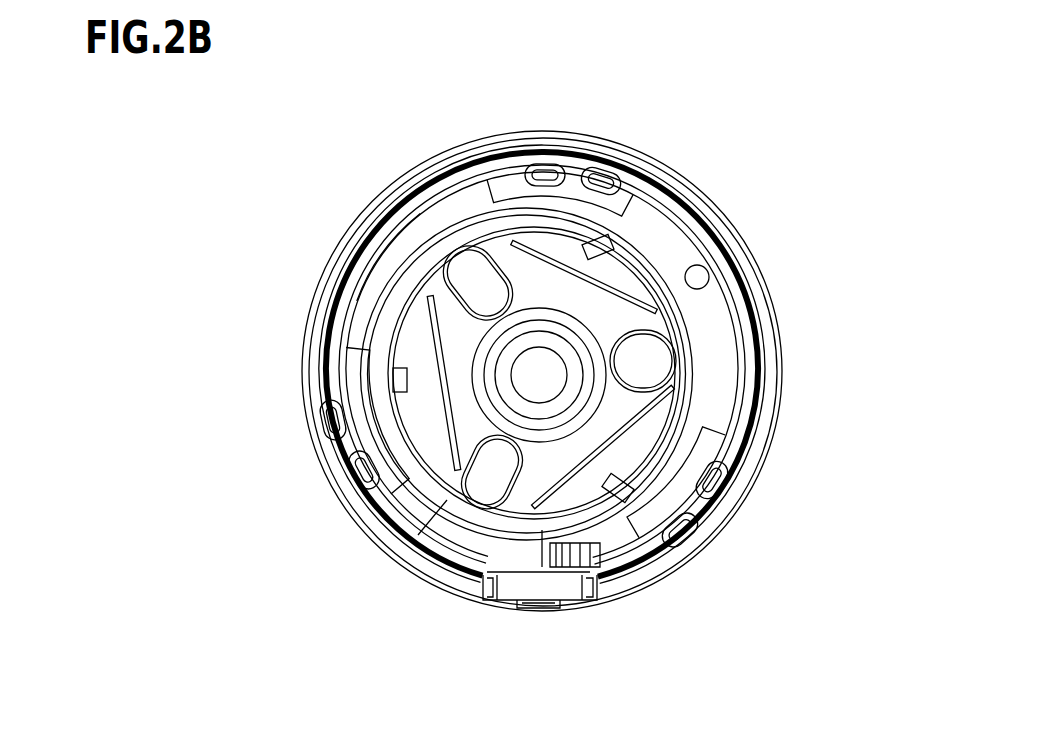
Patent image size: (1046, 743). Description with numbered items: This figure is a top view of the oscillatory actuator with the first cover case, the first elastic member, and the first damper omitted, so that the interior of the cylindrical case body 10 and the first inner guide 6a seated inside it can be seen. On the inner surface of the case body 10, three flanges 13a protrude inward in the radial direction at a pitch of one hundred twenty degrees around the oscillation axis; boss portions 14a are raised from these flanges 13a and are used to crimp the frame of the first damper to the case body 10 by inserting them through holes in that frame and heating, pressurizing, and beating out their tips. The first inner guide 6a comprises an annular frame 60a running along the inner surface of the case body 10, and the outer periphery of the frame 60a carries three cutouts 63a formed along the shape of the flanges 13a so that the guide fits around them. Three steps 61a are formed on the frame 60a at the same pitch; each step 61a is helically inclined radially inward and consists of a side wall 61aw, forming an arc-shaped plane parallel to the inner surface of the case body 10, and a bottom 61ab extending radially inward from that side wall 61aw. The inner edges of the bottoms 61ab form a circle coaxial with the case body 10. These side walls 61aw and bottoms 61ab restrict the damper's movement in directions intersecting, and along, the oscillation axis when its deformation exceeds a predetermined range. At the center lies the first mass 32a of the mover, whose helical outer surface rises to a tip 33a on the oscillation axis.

The first inner guide 6a is at (398, 213).
The case body 10 is at (300, 382).
The flanges 13a is at (503, 176).
The boss portions 14a is at (547, 165).
The first mass 32a is at (590, 337).
The tip 33a is at (550, 362).
The annular frame 60a is at (477, 205).
The steps 61a is at (232, 210).
The bottom 61ab is at (408, 255).
The side wall 61aw is at (403, 300).
The cutouts 63a is at (598, 177).